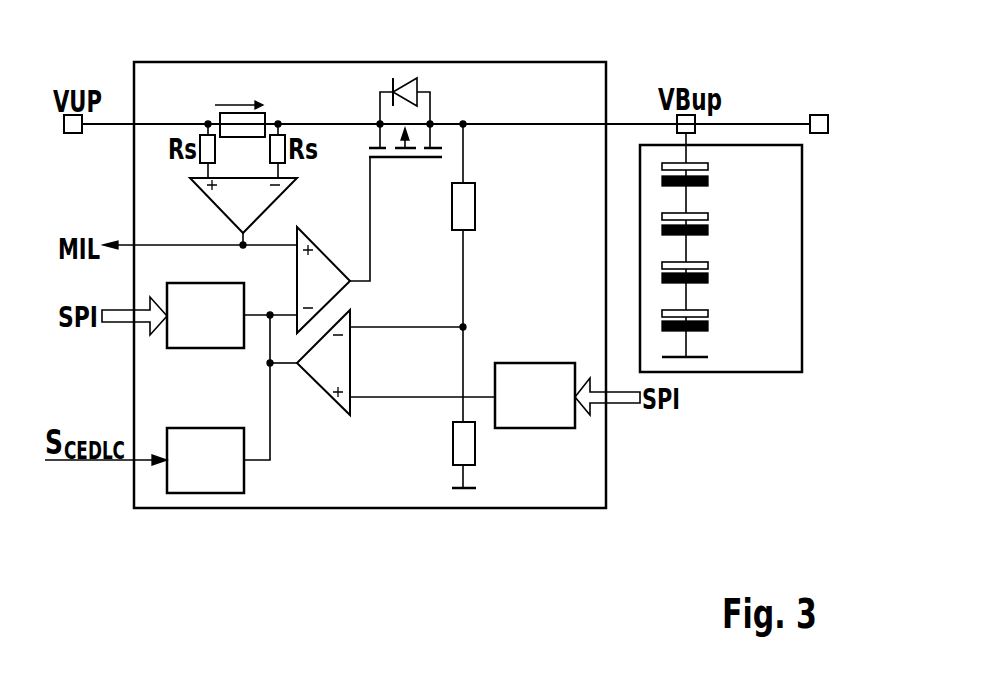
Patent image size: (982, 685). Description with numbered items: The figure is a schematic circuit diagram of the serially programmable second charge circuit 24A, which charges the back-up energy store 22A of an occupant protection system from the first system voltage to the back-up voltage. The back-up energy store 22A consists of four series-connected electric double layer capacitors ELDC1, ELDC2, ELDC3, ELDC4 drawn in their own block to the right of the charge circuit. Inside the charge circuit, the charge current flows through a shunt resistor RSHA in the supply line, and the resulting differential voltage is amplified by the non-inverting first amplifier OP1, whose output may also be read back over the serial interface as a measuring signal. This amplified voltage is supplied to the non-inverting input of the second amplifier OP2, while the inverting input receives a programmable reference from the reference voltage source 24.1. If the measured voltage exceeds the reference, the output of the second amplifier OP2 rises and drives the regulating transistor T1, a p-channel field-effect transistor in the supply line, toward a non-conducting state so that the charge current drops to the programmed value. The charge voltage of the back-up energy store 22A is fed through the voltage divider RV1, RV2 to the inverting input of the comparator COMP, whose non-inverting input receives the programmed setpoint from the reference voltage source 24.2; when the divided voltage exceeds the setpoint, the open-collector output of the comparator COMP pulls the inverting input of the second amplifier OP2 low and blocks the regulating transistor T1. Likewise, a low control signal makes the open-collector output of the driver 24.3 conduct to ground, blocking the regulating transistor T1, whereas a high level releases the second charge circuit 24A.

The second charge circuit 24A is at (528, 62).
The reference voltage source 24.1 is at (204, 348).
The reference voltage source 24.2 is at (535, 363).
The driver 24.3 is at (204, 493).
The back-up energy store 22A is at (721, 284).
The regulating transistor T1 is at (405, 132).
The voltage divider resistor RV1 is at (489, 206).
The voltage divider resistor RV2 is at (490, 455).
The first amplifier OP1 is at (222, 212).
The second amplifier OP2 is at (297, 265).
The comparator COMP is at (350, 362).
The shunt resistor RSHA is at (243, 107).
The electric double layer capacitor ELDC1 is at (726, 175).
The electric double layer capacitor ELDC2 is at (726, 224).
The electric double layer capacitor ELDC3 is at (726, 273).
The electric double layer capacitor ELDC4 is at (726, 321).